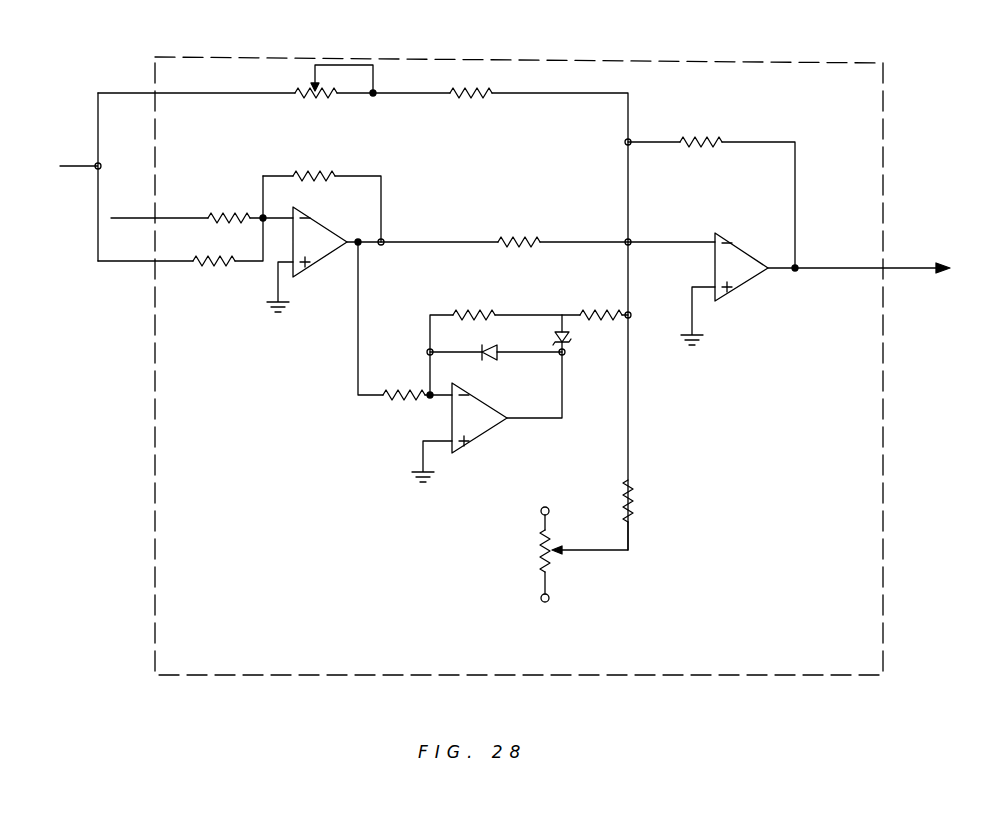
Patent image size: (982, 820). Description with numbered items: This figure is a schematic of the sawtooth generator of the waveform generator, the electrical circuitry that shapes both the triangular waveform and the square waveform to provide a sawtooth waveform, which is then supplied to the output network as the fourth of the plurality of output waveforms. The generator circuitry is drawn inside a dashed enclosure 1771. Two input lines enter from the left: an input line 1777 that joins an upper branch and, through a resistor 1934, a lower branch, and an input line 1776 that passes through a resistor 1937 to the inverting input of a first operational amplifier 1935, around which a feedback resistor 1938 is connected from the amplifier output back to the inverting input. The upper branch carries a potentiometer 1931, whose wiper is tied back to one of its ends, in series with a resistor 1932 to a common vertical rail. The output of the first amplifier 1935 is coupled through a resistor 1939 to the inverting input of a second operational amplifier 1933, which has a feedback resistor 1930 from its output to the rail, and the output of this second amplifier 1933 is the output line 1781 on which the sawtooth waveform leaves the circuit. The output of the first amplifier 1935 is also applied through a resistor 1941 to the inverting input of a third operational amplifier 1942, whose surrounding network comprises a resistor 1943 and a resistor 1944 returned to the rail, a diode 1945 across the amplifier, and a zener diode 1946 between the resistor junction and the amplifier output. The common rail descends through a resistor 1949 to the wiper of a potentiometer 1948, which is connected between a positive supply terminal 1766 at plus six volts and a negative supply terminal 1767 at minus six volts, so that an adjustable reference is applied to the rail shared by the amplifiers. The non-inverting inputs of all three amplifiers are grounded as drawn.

The feedback resistor 1930 is at (704, 138).
The potentiometer 1931 is at (317, 100).
The resistor 1932 is at (468, 92).
The operational amplifier 1933 is at (728, 240).
The resistor 1934 is at (210, 270).
The operational amplifier 1935 is at (331, 233).
The input resistor 1937 is at (231, 214).
The feedback resistor 1938 is at (307, 172).
The resistor 1939 is at (514, 240).
The resistor 1941 is at (403, 392).
The operational amplifier 1942 is at (493, 428).
The resistor 1943 is at (471, 313).
The resistor 1944 is at (596, 313).
The diode 1945 is at (493, 358).
The zener diode 1946 is at (569, 338).
The potentiometer 1948 is at (540, 546).
The resistor 1949 is at (629, 500).
The positive supply terminal 1766 is at (540, 512).
The negative supply terminal 1767 is at (541, 599).
The circuit block 1771 is at (883, 457).
The input line 1776 is at (145, 196).
The input line 1777 is at (84, 165).
The output line 1781 is at (920, 272).